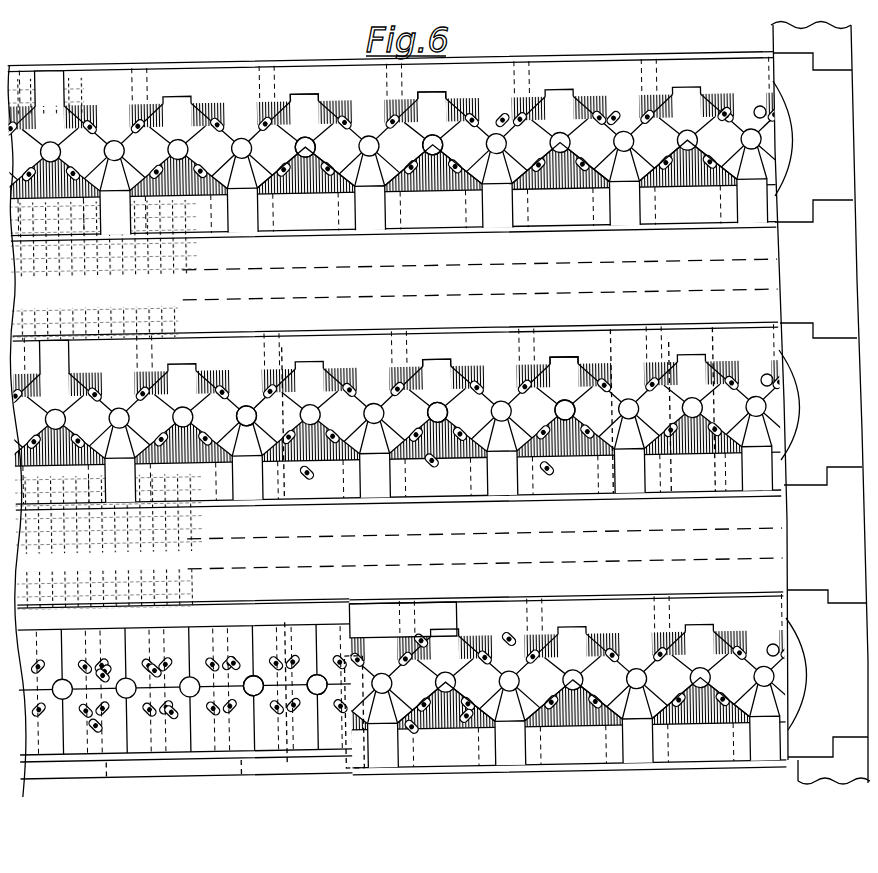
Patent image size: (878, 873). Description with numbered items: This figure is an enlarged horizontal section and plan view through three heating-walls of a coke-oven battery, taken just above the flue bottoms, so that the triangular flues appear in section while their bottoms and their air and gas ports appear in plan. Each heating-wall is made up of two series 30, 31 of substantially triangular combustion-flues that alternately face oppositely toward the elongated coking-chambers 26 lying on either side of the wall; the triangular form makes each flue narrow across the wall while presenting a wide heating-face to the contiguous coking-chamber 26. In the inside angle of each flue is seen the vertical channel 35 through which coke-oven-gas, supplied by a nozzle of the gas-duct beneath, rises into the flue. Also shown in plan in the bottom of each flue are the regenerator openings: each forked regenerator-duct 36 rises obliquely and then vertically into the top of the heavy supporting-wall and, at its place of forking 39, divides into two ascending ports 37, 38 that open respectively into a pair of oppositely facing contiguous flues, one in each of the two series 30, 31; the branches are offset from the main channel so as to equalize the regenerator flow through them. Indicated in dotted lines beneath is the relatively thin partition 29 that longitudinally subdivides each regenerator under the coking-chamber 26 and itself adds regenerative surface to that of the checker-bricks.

The coking-chamber 26 is at (482, 414).
The partition 29 is at (408, 288).
The series of triangular combustion-flues 30 is at (690, 700).
The series of triangular combustion-flues 31 is at (500, 640).
The vertical channel 35 is at (253, 695).
The forked regenerator-duct 36 is at (283, 345).
The ascending port 37 is at (465, 720).
The ascending port 38 is at (410, 640).
The place of forking 39 is at (225, 663).